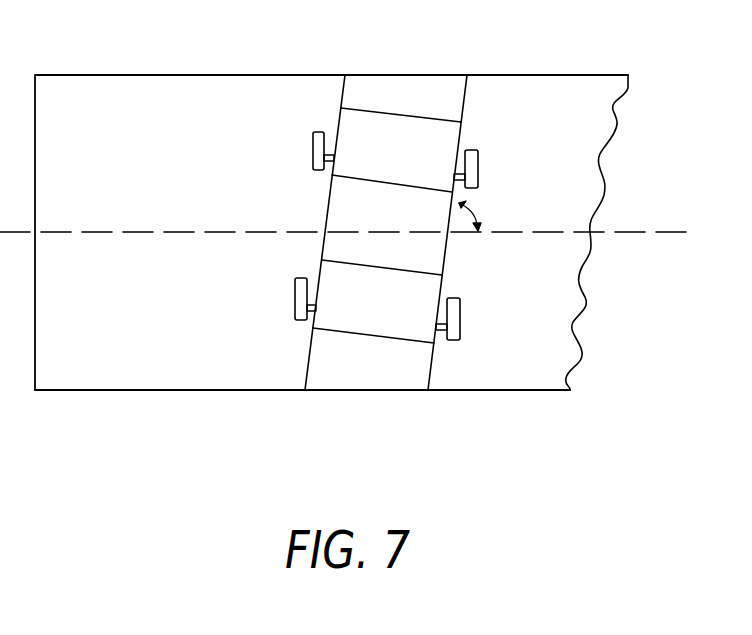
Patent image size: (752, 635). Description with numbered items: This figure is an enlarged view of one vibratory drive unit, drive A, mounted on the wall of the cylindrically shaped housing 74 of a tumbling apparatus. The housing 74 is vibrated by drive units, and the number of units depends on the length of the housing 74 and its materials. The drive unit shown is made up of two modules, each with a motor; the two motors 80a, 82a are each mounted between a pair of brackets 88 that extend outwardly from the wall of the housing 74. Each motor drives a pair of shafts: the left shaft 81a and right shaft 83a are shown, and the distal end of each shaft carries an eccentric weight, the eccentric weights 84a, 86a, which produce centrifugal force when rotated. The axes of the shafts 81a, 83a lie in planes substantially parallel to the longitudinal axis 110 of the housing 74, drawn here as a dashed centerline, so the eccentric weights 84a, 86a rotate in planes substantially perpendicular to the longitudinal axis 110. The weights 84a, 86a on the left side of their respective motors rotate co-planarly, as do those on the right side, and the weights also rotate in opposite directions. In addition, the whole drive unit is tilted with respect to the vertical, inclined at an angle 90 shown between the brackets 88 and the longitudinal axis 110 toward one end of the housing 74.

The housing 74 is at (148, 74).
The longitudinal axis 110 is at (630, 232).
The left shaft 81a is at (331, 160).
The brackets 88 is at (467, 93).
The motor 80a is at (405, 122).
The motor 82a is at (418, 270).
The angle 90 is at (472, 208).
The eccentric weight 84a is at (313, 157).
The eccentric weight 86a is at (295, 293).
The right shaft 83a is at (311, 312).